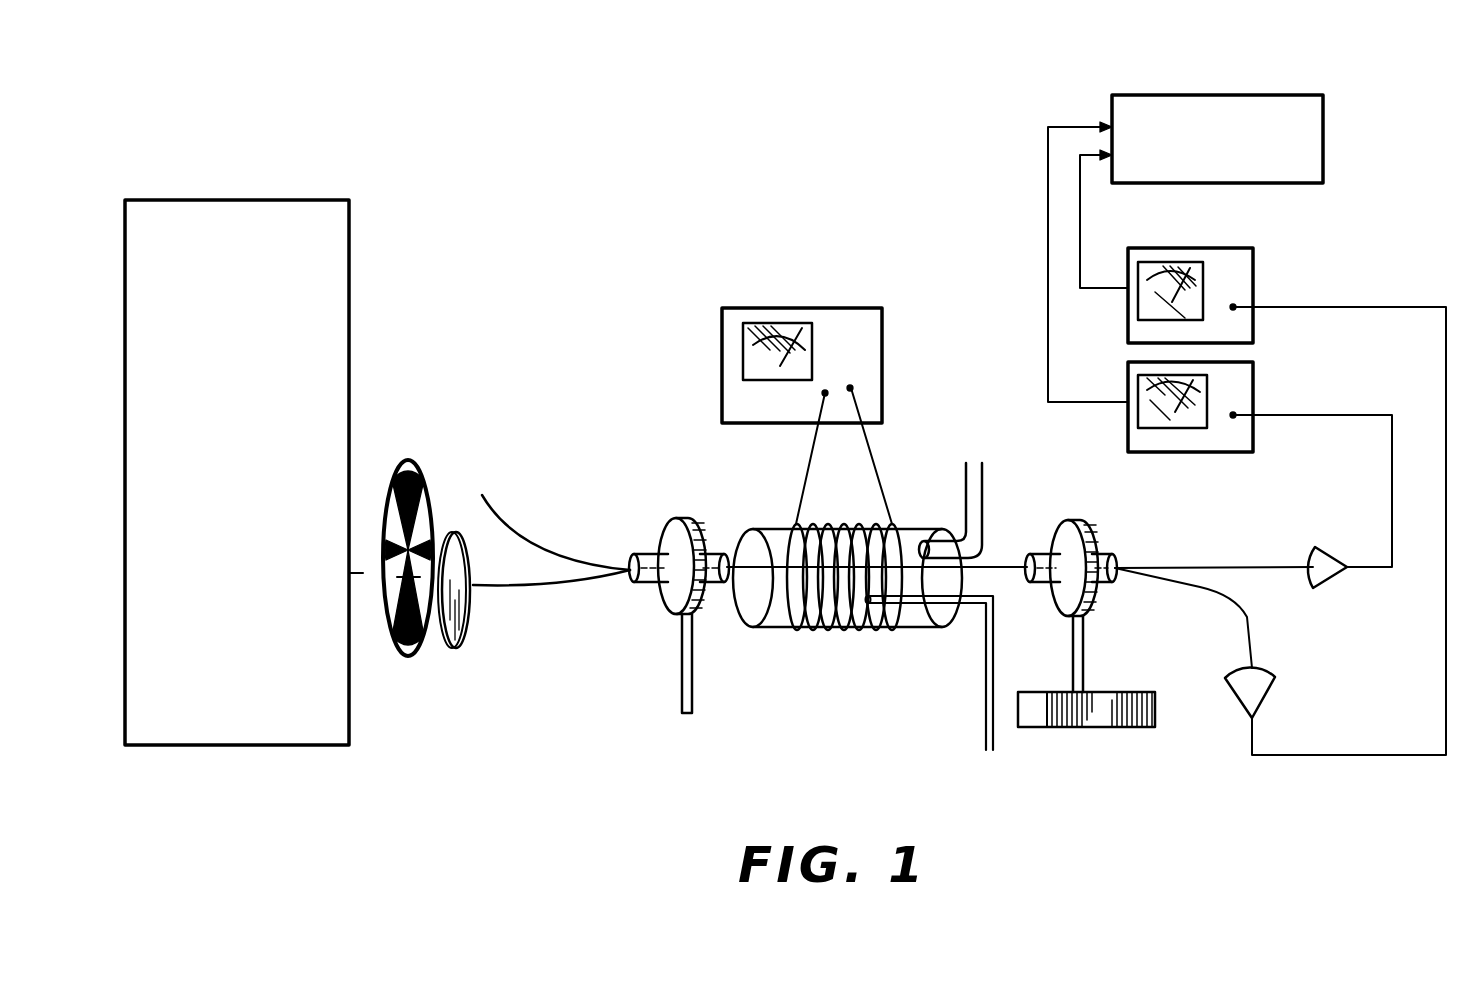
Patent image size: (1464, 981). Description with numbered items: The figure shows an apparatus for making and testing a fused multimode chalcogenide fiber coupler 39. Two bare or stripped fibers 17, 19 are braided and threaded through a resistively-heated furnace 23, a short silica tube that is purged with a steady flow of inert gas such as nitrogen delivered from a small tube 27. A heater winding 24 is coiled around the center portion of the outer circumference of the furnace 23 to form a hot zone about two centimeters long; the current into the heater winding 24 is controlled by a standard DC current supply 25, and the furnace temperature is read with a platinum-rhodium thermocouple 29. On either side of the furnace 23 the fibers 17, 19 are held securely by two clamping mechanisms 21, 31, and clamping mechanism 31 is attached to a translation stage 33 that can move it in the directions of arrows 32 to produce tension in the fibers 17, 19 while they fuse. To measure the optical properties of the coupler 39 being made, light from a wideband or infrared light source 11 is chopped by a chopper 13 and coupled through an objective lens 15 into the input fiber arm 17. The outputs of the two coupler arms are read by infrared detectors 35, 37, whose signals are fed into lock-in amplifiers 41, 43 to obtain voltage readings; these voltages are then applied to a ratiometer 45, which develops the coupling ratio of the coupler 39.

The light source 11 is at (272, 200).
The chopper 13 is at (412, 460).
The objective lens 15 is at (452, 648).
The fiber 17 is at (545, 593).
The fiber 19 is at (558, 556).
The clamping mechanism 21 is at (688, 519).
The resistively-heated furnace 23 is at (916, 497).
The heater winding 24 is at (818, 528).
The DC current supply 25 is at (824, 308).
The tube 27 is at (985, 500).
The thermocouple 29 is at (987, 688).
The clamping mechanism 31 is at (1085, 522).
The arrows 32 is at (1073, 745).
The translation stage 33 is at (1050, 728).
The detector 35 is at (1268, 692).
The detector 37 is at (1330, 548).
The fused multimode fiber coupler 39 is at (843, 658).
The lock-in amplifier 41 is at (1254, 276).
The lock-in amplifier 43 is at (1254, 395).
The ratiometer 45 is at (1275, 45).